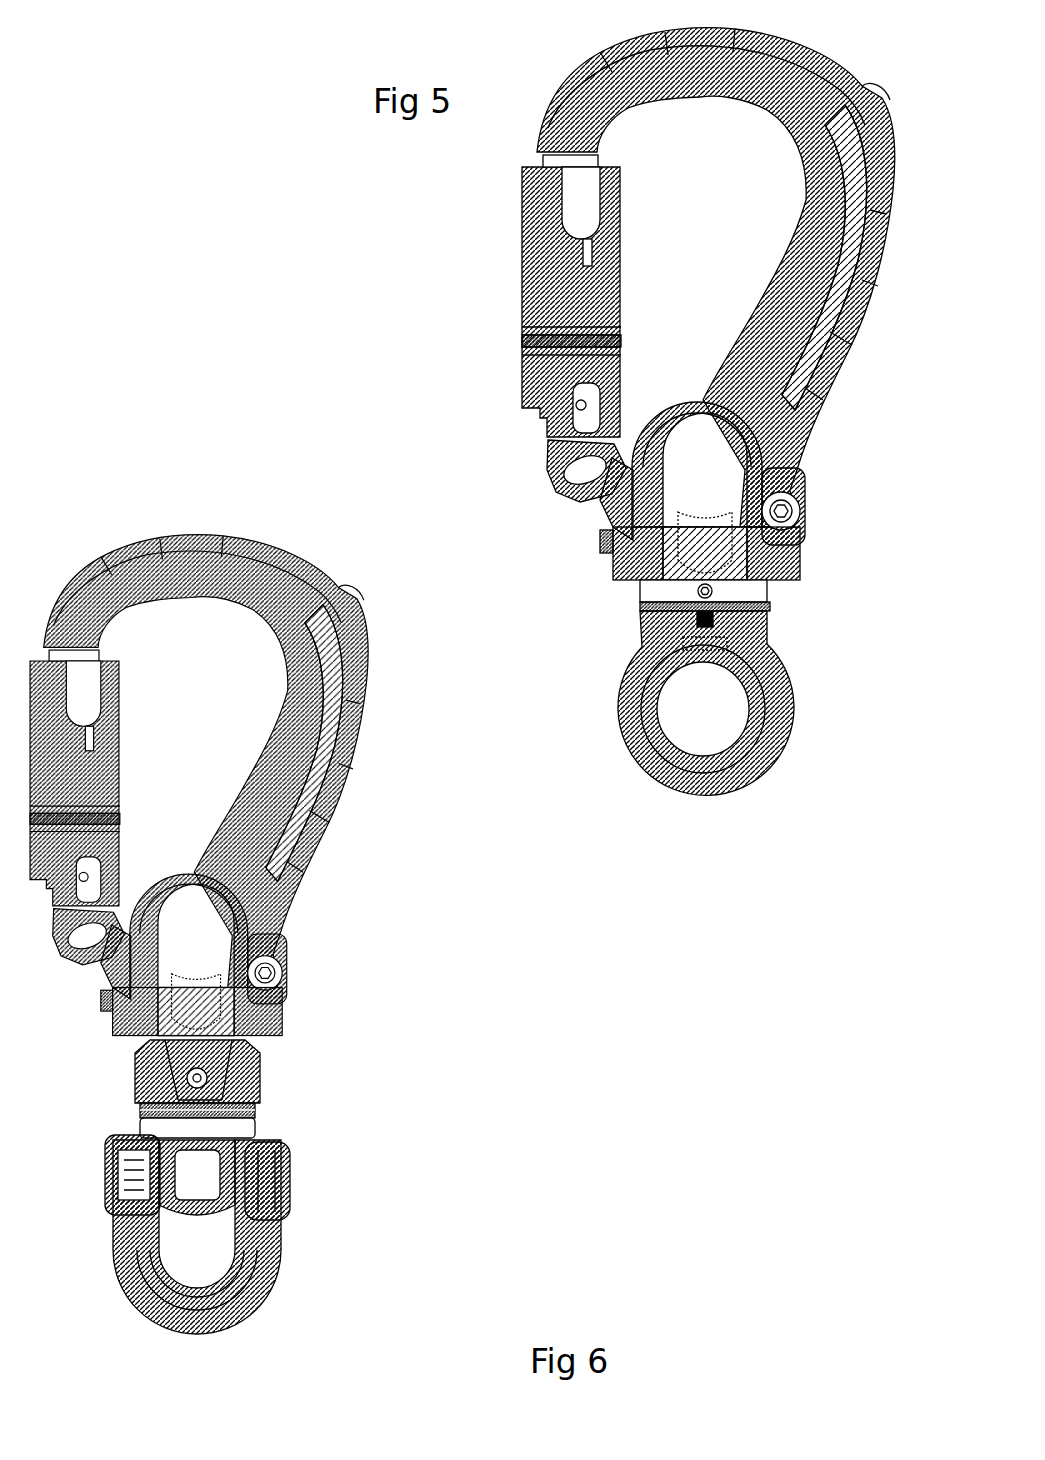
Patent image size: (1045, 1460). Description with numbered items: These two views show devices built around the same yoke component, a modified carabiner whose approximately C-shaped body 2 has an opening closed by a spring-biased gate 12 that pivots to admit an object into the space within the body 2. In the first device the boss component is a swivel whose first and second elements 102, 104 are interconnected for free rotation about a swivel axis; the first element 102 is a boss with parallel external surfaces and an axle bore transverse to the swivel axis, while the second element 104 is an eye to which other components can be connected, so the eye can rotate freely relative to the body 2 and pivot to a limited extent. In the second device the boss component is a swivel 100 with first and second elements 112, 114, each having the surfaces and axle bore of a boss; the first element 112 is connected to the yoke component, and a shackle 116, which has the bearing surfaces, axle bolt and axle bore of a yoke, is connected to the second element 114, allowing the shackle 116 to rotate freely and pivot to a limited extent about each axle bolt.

In FIG. 5, the body 2 is at (840, 40).
In FIG. 6, the body 2 is at (278, 500).
In FIG. 5, the gate 12 is at (476, 292).
In FIG. 6, the swivel 100 is at (286, 1050).
In FIG. 5, the first element 102 is at (613, 590).
In FIG. 5, the second element 104 is at (593, 760).
In FIG. 6, the first element 112 is at (260, 1072).
In FIG. 6, the second element 114 is at (247, 1127).
In FIG. 6, the shackle 116 is at (277, 1240).